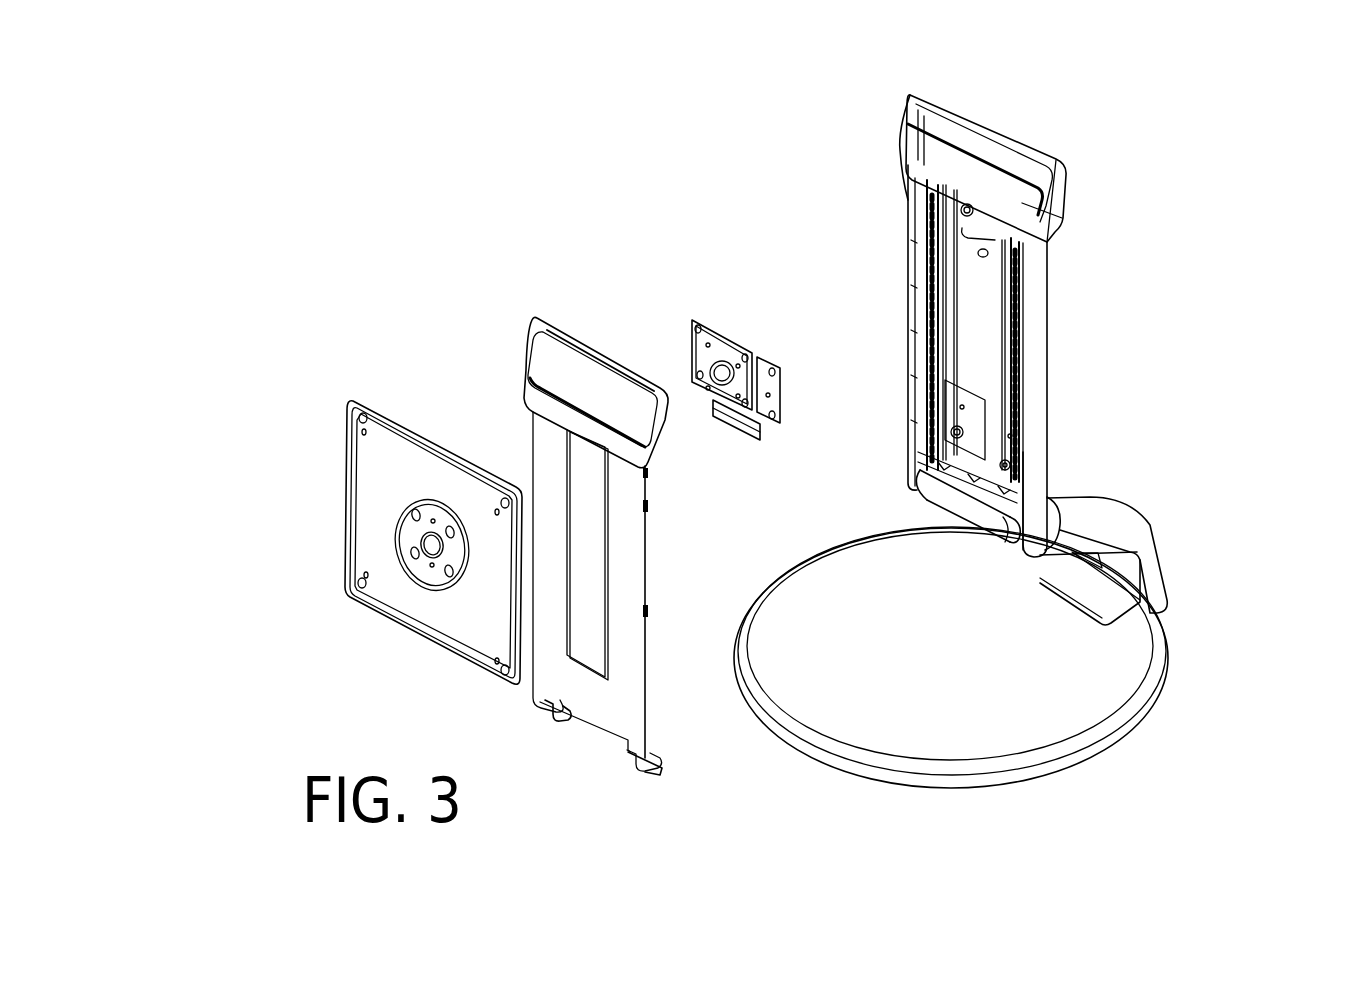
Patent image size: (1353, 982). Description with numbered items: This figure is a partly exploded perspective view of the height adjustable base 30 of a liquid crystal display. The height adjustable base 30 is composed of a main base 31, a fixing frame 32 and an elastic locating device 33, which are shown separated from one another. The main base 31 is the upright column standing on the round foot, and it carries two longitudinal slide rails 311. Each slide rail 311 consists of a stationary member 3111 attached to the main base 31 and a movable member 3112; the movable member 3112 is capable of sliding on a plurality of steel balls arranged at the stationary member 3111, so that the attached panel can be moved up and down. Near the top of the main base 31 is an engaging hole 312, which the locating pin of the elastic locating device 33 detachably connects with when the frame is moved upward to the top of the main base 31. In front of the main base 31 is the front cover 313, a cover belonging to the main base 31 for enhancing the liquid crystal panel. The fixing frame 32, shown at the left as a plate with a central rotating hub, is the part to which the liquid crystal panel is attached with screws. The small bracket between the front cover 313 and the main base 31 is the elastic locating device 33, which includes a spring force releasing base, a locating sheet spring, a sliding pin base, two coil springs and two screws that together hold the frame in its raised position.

The height adjustable base 30 is at (293, 80).
The main base 31 is at (1028, 447).
The longitudinal slide rail 311 is at (760, 170).
The stationary member 3111 is at (905, 285).
The movable member 3112 is at (903, 232).
The engaging hole 312 is at (983, 247).
The front cover 313 is at (542, 428).
The fixing frame 32 is at (318, 474).
The elastic locating device 33 is at (713, 435).